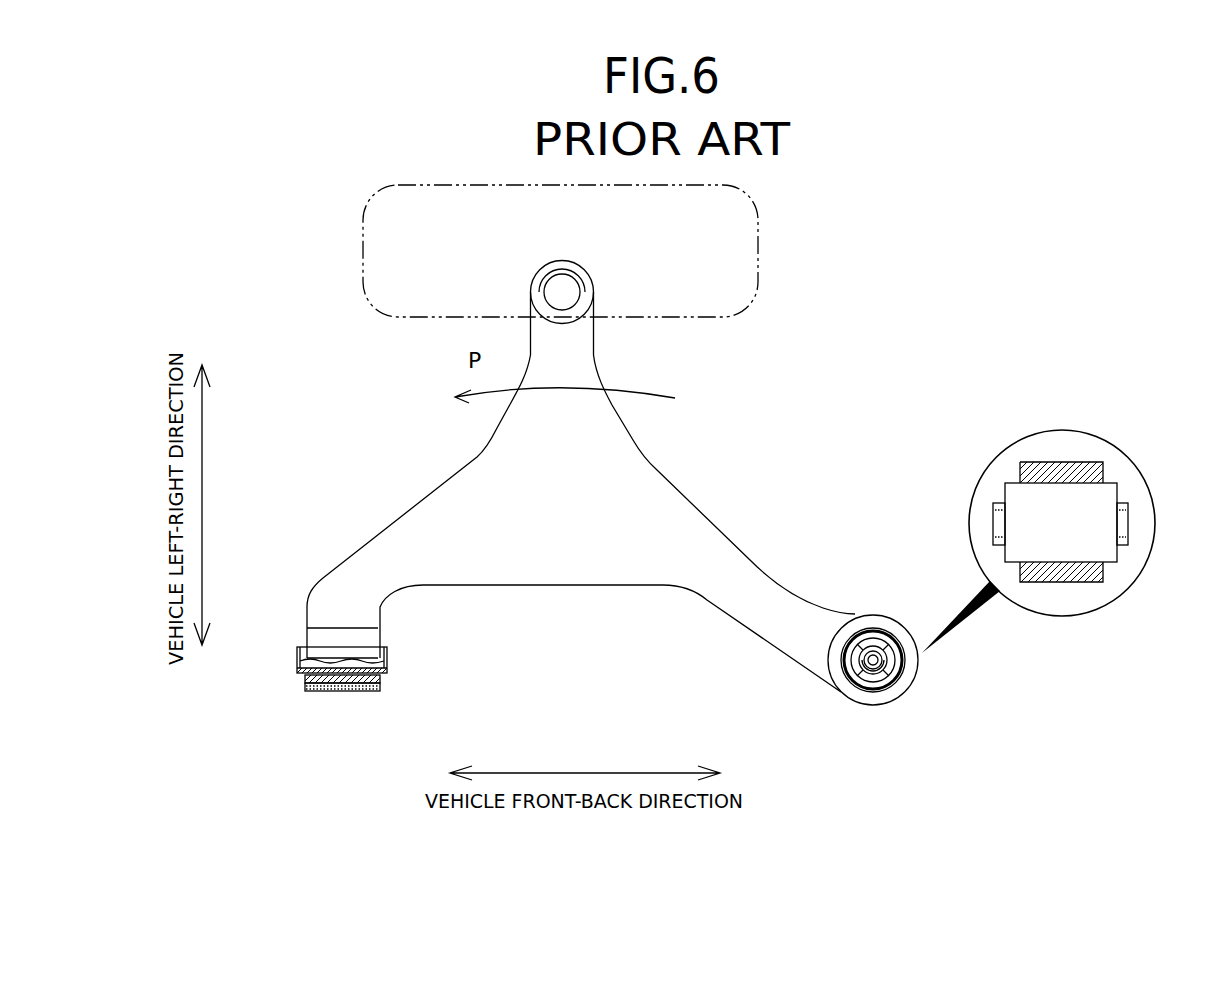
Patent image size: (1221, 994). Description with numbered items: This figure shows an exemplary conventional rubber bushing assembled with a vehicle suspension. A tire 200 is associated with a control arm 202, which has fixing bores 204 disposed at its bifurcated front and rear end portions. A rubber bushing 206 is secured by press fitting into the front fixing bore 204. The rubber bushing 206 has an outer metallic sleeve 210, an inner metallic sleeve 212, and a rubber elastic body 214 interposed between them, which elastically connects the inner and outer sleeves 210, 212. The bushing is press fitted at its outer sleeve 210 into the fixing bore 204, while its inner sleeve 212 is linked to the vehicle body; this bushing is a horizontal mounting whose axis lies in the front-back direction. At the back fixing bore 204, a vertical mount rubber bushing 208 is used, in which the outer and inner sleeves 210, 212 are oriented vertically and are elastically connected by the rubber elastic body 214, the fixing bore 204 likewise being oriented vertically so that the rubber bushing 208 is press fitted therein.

The tire 200 is at (770, 200).
The control arm 202 is at (656, 459).
The fixing bores 204 is at (372, 640).
The rubber bushing 206 is at (297, 627).
The vertical mount rubber bushing 208 is at (877, 612).
The outer metallic sleeve 210 is at (385, 678).
The inner metallic sleeve 212 is at (300, 648).
The rubber elastic body 214 is at (322, 692).